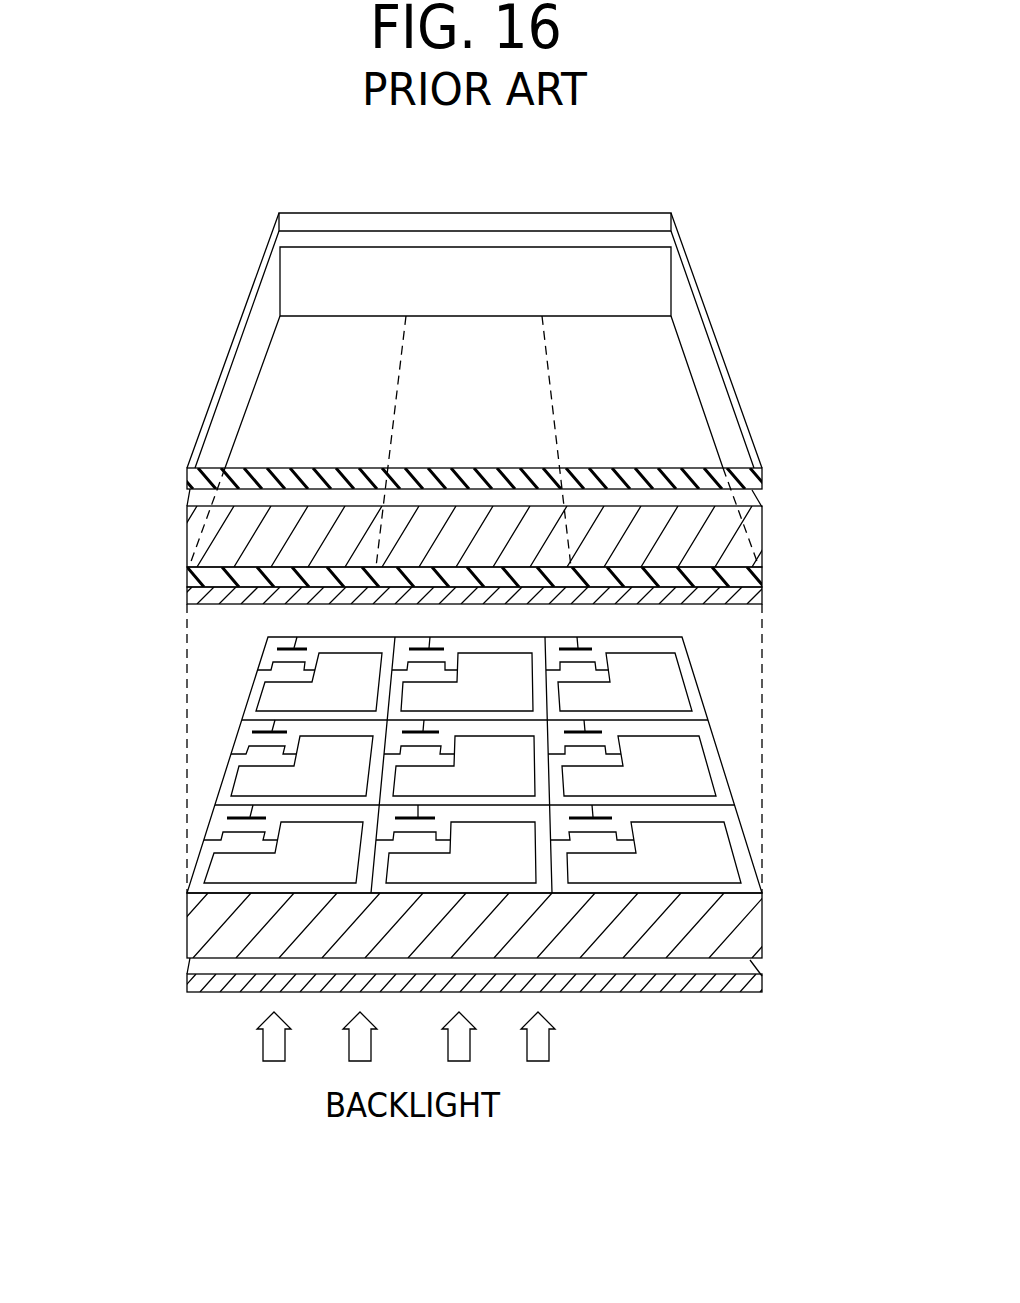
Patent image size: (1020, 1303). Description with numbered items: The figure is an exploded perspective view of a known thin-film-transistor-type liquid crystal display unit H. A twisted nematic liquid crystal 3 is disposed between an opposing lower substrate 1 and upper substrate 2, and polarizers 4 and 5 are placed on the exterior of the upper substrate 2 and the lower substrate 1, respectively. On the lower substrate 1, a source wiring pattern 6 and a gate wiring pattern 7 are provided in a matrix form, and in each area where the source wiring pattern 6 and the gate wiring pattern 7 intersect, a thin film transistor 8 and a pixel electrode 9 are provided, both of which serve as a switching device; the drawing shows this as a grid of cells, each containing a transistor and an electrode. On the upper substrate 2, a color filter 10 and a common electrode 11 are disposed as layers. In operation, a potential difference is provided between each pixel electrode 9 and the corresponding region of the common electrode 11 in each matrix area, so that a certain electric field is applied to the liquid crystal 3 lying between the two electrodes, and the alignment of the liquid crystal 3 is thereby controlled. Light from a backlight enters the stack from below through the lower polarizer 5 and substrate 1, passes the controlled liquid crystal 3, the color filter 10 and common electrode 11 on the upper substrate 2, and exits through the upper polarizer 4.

The liquid crystal display unit H is at (731, 327).
The polarizer 4 is at (187, 478).
The upper substrate 2 is at (187, 524).
The color filter 10 is at (762, 578).
The common electrode 11 is at (762, 602).
The liquid crystal 3 is at (700, 688).
The gate wiring pattern 7 is at (707, 806).
The pixel electrode 9 is at (245, 780).
The lower substrate 1 is at (186, 932).
The polarizer 5 is at (186, 980).
The source wiring pattern 6 is at (552, 877).
The thin film transistor 8 is at (597, 832).